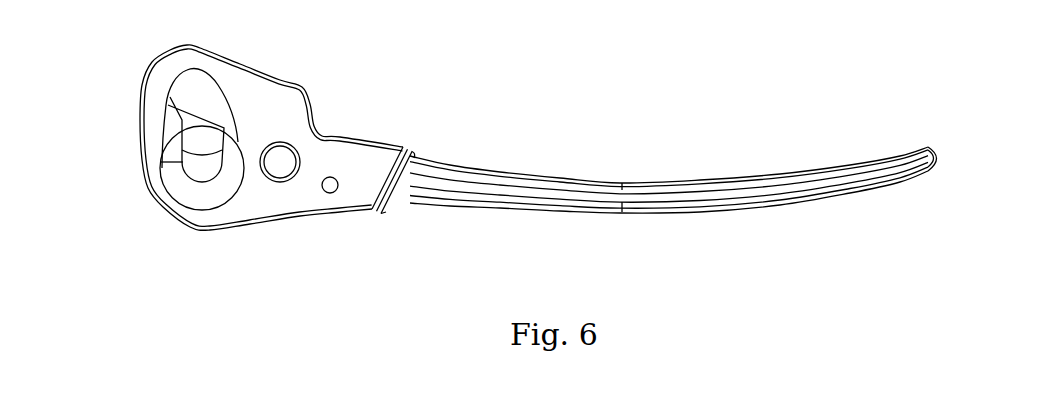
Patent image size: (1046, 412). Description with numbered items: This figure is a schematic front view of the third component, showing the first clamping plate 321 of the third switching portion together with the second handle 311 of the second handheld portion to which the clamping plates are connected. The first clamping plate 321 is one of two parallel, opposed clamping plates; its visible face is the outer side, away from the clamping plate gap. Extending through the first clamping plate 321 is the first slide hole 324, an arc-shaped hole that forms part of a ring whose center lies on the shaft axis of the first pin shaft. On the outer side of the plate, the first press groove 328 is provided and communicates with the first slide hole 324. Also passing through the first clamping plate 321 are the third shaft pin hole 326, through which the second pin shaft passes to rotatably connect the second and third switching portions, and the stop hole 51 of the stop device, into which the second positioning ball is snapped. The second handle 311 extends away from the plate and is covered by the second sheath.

The first clamping plate 321 is at (275, 95).
The first slide hole 324 is at (190, 90).
The first press groove 328 is at (173, 180).
The third shaft pin hole 326 is at (288, 158).
The stop hole 51 is at (338, 195).
The second handle 311 is at (660, 180).